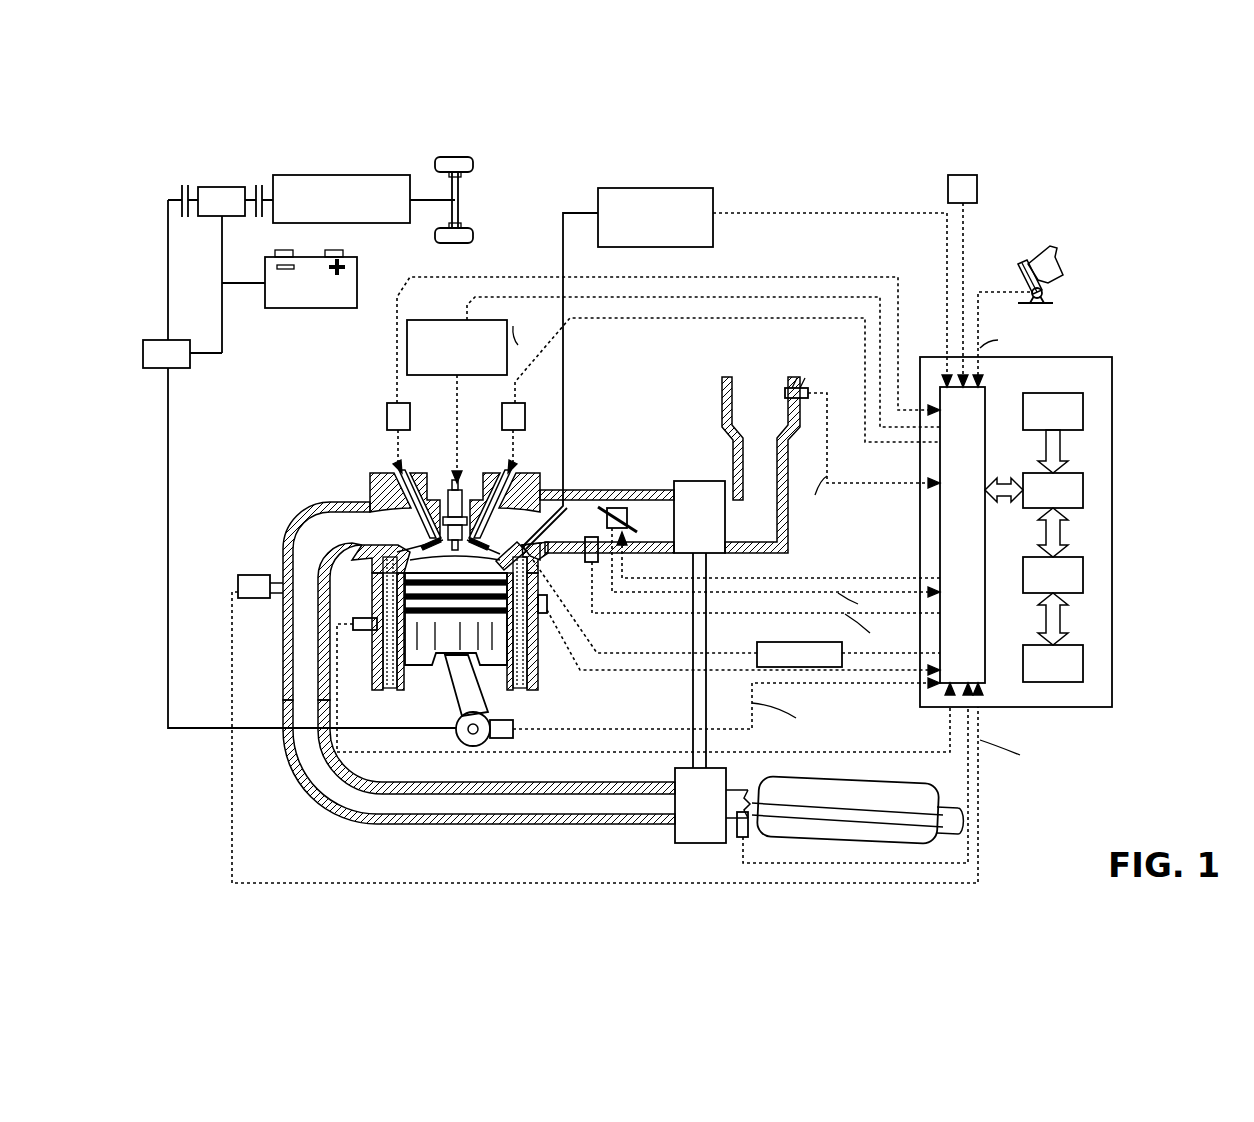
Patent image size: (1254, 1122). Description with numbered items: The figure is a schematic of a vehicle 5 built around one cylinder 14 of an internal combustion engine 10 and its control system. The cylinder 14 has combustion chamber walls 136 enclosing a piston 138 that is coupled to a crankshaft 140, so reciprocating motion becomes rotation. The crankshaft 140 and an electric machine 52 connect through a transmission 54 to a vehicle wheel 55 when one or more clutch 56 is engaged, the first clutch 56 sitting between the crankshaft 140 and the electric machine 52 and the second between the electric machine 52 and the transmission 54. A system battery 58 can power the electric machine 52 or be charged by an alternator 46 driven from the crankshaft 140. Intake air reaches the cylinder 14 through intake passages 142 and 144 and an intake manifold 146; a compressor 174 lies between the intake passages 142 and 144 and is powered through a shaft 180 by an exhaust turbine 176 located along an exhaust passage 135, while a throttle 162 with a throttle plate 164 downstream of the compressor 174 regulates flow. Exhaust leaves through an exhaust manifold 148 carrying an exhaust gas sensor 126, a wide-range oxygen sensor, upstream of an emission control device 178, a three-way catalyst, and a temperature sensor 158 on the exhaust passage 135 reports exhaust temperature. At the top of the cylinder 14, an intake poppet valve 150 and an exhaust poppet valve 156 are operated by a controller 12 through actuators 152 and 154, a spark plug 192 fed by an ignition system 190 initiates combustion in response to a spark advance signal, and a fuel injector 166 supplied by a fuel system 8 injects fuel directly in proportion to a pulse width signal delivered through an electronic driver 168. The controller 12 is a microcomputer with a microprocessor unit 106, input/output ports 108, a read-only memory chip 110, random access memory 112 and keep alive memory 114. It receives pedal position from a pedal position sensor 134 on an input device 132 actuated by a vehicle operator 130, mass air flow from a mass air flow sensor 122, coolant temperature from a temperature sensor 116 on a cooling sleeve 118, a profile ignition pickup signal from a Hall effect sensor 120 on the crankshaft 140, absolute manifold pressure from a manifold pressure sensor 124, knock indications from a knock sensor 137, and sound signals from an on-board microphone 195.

The vehicle 5 is at (1190, 163).
The fuel system 8 is at (686, 190).
The internal combustion engine 10 is at (318, 437).
The controller 12 is at (1112, 360).
The cylinder 14 is at (430, 560).
The alternator 46 is at (143, 362).
The electric machine 52 is at (212, 187).
The transmission 54 is at (392, 223).
The vehicle wheel 55 is at (440, 162).
The clutch 56 is at (182, 190).
The system battery 58 is at (306, 308).
The microprocessor unit 106 is at (1083, 490).
The input/output ports 108 is at (985, 400).
The read-only memory chip 110 is at (1083, 410).
The random access memory 112 is at (1083, 578).
The keep alive memory 114 is at (1083, 665).
The temperature sensor 116 is at (542, 630).
The cooling sleeve 118 is at (535, 665).
The Hall effect sensor 120 is at (515, 735).
The mass air flow sensor 122 is at (804, 388).
The MAP sensor 124 is at (597, 565).
The exhaust gas sensor 126 is at (238, 582).
The vehicle operator 130 is at (1060, 263).
The input device 132 is at (1023, 275).
The pedal position sensor 134 is at (1048, 293).
The exhaust passage 135 is at (604, 786).
The combustion chamber walls 136 is at (400, 680).
The knock sensor 137 is at (362, 630).
The piston 138 is at (445, 660).
The crankshaft 140 is at (456, 732).
The intake passage 142 is at (761, 465).
The intake passage 144 is at (609, 530).
The intake manifold 146 is at (607, 509).
The exhaust manifold 148 is at (326, 601).
The intake poppet valve 150 is at (478, 530).
The actuator 152 is at (504, 408).
The actuator 154 is at (387, 407).
The exhaust poppet valve 156 is at (428, 530).
The temperature sensor 158 is at (738, 835).
The throttle 162 is at (627, 512).
The throttle plate 164 is at (610, 508).
The fuel injector 166 is at (512, 546).
The electronic driver 168 is at (760, 643).
The compressor 174 is at (699, 517).
The exhaust turbine 176 is at (712, 805).
The emission control device 178 is at (905, 787).
The shaft 180 is at (706, 695).
The ignition system 190 is at (420, 320).
The spark plug 192 is at (446, 496).
The on-board microphone 195 is at (977, 182).